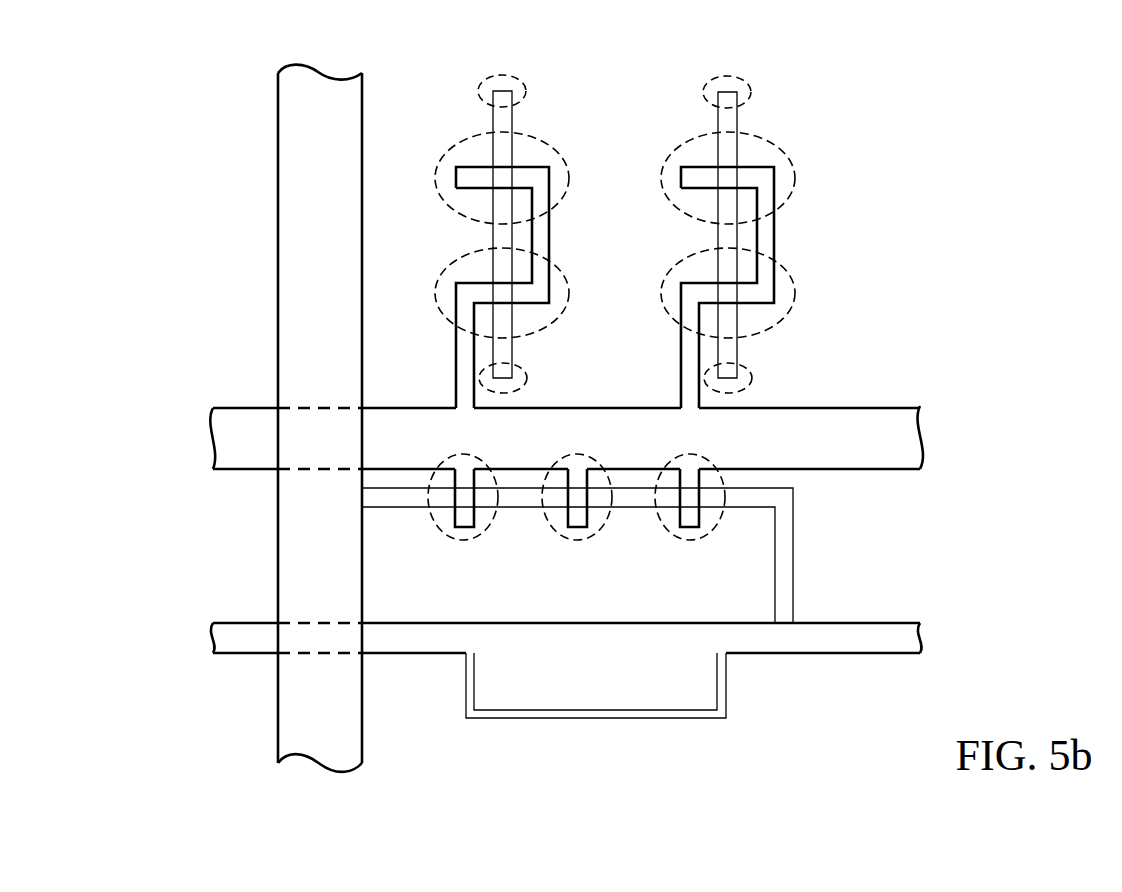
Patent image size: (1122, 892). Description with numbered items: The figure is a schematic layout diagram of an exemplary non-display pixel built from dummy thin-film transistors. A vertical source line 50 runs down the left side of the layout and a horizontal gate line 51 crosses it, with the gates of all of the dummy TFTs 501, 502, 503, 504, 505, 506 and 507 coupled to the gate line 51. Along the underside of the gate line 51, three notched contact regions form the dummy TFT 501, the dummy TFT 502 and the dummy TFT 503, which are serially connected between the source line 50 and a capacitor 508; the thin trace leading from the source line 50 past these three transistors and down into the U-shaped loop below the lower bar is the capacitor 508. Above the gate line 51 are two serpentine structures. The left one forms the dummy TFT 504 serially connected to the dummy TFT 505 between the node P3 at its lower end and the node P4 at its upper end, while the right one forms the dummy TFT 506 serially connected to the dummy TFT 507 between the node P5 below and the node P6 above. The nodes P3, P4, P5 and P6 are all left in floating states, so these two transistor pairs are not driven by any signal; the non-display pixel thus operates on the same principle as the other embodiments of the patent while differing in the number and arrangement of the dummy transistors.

The source line 50 is at (318, 78).
The gate line 51 is at (245, 408).
The dummy TFT 501 is at (462, 541).
The dummy TFT 502 is at (575, 541).
The dummy TFT 503 is at (688, 541).
The dummy TFT 504 is at (569, 293).
The dummy TFT 505 is at (569, 178).
The dummy TFT 506 is at (795, 293).
The dummy TFT 507 is at (795, 178).
The capacitor 508 is at (659, 731).
The node P3 is at (527, 373).
The node P4 is at (526, 86).
The node P5 is at (752, 373).
The node P6 is at (751, 87).